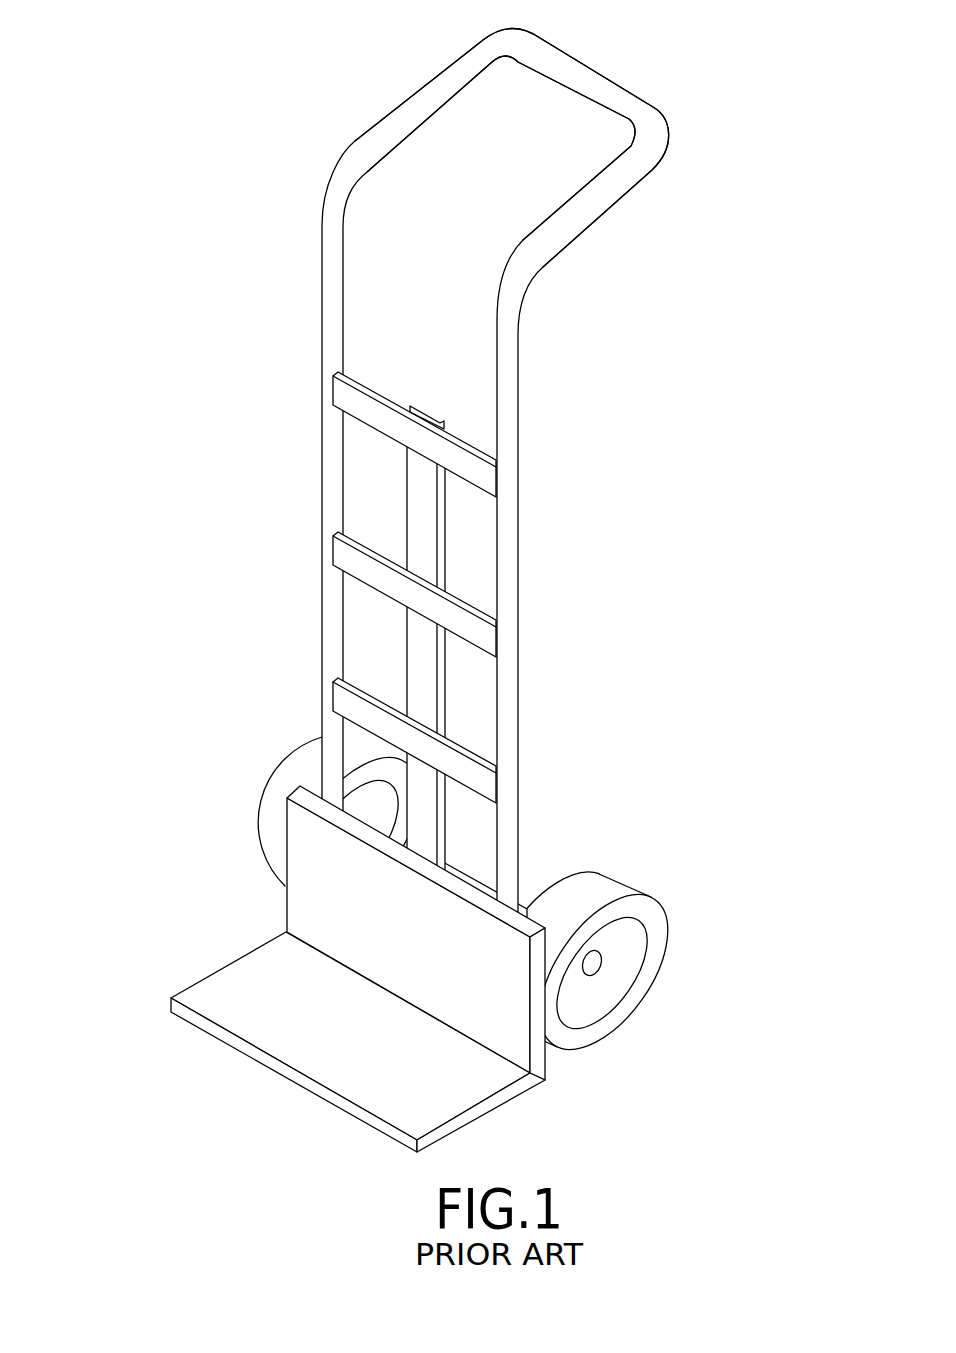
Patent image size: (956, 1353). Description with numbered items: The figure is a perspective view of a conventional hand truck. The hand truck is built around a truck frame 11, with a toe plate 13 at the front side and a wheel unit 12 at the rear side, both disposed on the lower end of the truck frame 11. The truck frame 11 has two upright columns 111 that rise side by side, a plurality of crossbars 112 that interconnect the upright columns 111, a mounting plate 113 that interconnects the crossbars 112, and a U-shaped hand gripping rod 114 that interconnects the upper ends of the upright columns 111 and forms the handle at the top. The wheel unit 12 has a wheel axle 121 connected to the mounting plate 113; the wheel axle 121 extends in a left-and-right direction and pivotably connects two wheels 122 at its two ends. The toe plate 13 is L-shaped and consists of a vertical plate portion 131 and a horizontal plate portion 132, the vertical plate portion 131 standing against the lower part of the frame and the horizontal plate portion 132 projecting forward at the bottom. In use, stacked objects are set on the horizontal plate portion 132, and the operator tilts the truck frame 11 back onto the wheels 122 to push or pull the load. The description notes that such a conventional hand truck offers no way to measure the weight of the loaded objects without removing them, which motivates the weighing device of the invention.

The truck frame 11 is at (449, 458).
The upright columns 111 is at (332, 492).
The crossbars 112 is at (472, 467).
The mounting plate 113 is at (420, 507).
The U-shaped hand gripping rod 114 is at (586, 90).
The wheel unit 12 is at (459, 889).
The wheel axle 121 is at (476, 883).
The wheels 122 is at (284, 793).
The toe plate 13 is at (437, 969).
The vertical plate portion 131 is at (338, 888).
The horizontal plate portion 132 is at (240, 990).